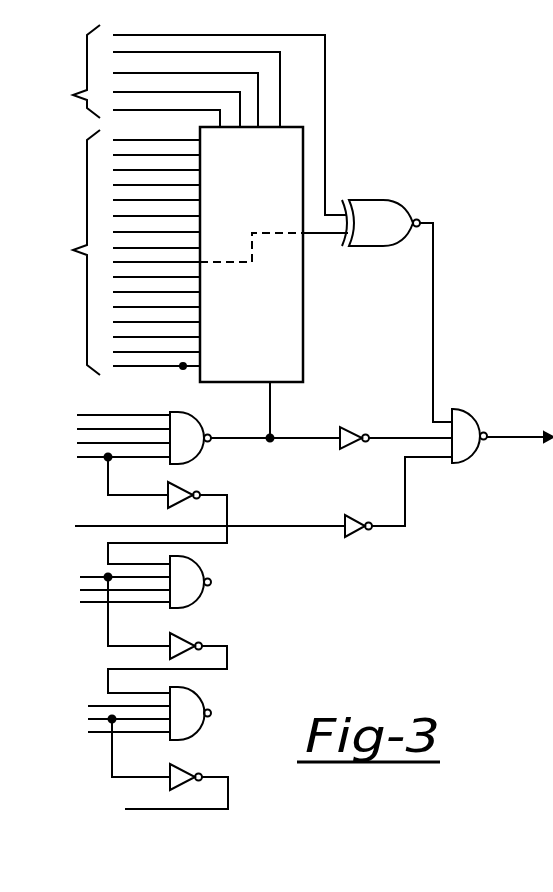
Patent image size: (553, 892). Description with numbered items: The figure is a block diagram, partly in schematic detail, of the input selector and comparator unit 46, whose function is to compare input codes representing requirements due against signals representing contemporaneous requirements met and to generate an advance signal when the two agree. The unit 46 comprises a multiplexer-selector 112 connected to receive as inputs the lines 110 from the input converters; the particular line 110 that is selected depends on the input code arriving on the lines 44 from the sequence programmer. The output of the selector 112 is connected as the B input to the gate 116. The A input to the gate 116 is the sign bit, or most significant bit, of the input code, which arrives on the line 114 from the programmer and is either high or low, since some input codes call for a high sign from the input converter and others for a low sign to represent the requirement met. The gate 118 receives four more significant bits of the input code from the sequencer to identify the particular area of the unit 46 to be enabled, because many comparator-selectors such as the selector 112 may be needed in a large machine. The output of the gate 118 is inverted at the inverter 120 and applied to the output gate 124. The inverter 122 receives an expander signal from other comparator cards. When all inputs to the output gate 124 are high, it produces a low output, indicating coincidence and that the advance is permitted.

The lines 44 is at (130, 88).
The lines 110 is at (125, 186).
The multiplexer-selector 112 is at (304, 318).
The line 114 is at (327, 80).
The gate 116 is at (395, 197).
The input selector and comparator unit 46 is at (372, 170).
The gate 118 is at (215, 400).
The inverter 120 is at (345, 447).
The inverter 122 is at (355, 535).
The output gate 124 is at (470, 412).